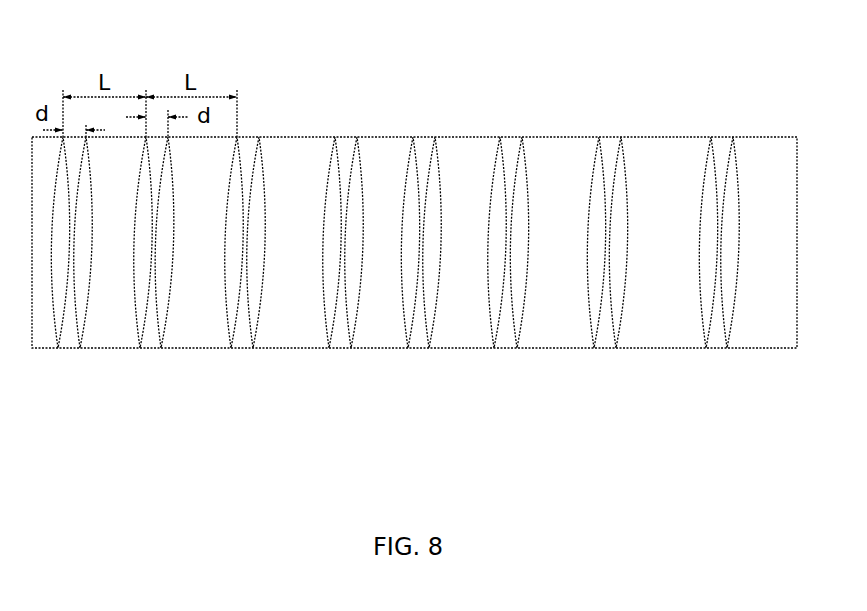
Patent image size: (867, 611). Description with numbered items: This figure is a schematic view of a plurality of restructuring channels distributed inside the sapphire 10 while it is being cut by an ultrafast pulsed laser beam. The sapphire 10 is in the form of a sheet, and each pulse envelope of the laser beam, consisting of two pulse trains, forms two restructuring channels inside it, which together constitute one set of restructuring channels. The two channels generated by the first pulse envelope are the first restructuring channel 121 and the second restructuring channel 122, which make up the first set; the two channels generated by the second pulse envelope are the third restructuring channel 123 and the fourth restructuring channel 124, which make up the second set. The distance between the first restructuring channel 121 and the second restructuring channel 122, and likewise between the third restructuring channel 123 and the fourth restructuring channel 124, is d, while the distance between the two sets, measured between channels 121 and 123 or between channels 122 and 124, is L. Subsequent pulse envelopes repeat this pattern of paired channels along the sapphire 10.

The sapphire 10 is at (50, 44).
The first restructuring channel 121 is at (57, 347).
The second restructuring channel 122 is at (83, 332).
The third restructuring channel 123 is at (142, 333).
The fourth restructuring channel 124 is at (167, 323).